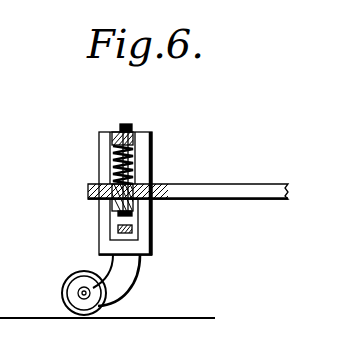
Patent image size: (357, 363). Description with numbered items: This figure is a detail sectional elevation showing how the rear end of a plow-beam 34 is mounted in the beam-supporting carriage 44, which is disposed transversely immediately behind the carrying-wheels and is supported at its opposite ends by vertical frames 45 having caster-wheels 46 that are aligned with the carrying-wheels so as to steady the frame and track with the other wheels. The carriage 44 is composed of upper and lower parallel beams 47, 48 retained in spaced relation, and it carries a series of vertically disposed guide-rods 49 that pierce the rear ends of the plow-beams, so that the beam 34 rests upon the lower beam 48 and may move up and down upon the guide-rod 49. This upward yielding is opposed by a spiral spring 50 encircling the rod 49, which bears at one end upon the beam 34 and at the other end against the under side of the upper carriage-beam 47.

The plow-beam 34 is at (247, 178).
The beam-supporting carriage 44 is at (99, 151).
The vertical frame 45 is at (148, 216).
The caster-wheel 46 is at (66, 282).
The upper beam 47 is at (116, 134).
The lower beam 48 is at (115, 210).
The guide-rod 49 is at (137, 183).
The spiral spring 50 is at (135, 156).